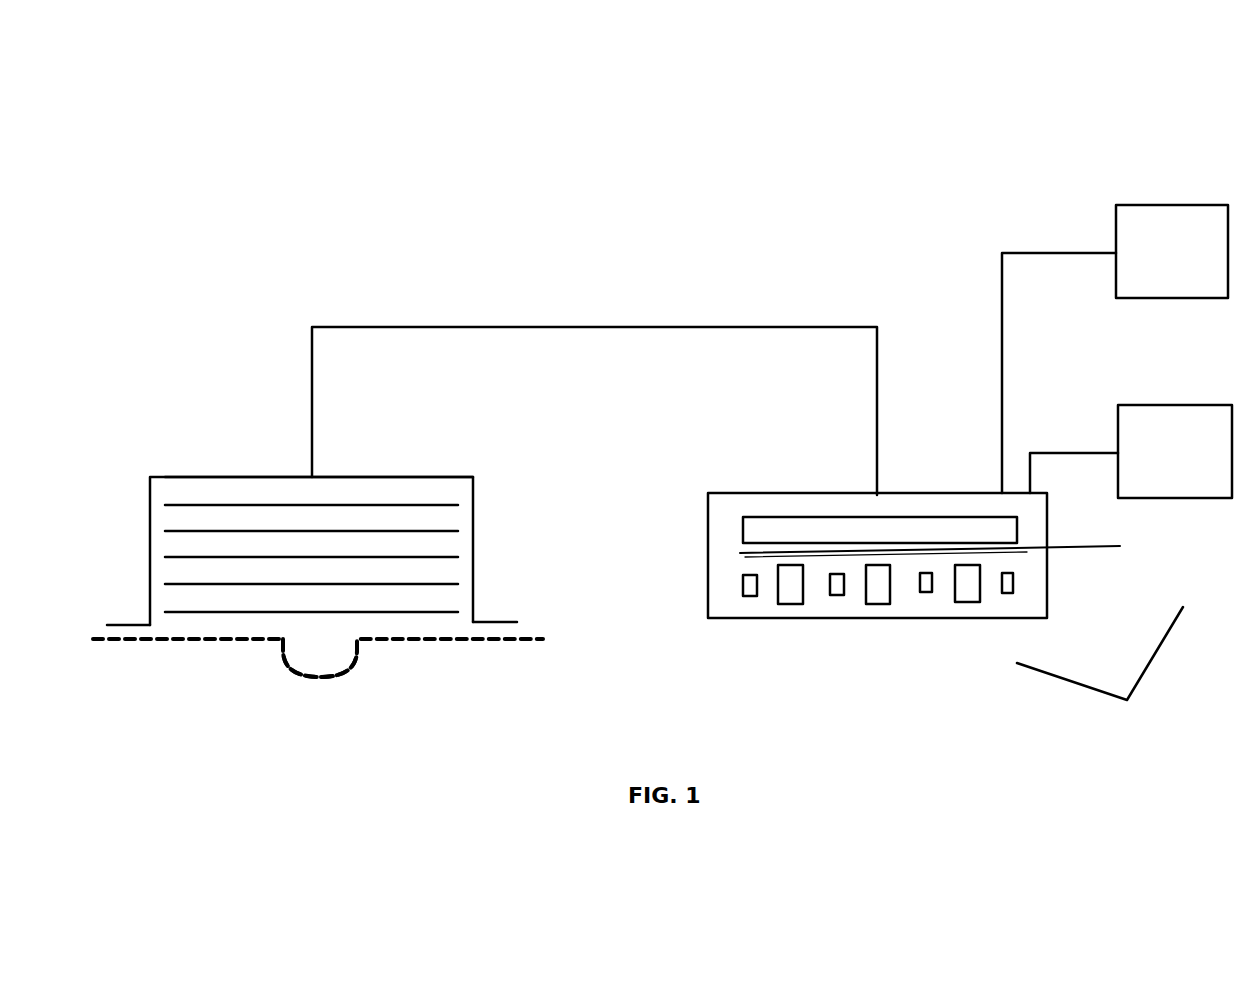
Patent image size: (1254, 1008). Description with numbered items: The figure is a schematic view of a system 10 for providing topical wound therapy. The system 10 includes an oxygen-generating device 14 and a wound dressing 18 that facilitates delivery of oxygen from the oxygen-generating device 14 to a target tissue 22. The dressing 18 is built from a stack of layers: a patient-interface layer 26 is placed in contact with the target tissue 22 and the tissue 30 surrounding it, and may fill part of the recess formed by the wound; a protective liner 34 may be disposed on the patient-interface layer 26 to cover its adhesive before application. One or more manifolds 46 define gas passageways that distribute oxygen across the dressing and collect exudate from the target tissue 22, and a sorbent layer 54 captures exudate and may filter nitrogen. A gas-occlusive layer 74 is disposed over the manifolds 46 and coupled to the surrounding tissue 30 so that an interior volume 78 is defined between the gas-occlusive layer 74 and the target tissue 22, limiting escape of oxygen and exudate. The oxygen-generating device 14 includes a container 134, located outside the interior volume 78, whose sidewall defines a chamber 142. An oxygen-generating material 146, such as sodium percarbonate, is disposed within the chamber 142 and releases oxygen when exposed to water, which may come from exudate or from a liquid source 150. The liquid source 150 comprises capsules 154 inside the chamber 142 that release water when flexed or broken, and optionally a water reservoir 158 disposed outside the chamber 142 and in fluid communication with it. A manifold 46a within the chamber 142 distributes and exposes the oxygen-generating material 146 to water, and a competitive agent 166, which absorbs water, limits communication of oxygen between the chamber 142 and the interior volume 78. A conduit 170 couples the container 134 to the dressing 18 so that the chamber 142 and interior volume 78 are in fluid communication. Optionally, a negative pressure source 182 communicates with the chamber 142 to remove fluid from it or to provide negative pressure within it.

The system 10 is at (224, 161).
The oxygen-generating device 14 is at (714, 459).
The wound dressing 18 is at (175, 412).
The target tissue 22 is at (296, 695).
The patient-interface layer 26 is at (177, 585).
The tissue surrounding the target tissue 30 is at (200, 660).
The protective liner 34 is at (173, 613).
The manifold 46 is at (167, 505).
The manifold 46a is at (745, 553).
The sorbent layer 54 is at (447, 529).
The gas-occlusive layer 74 is at (440, 475).
The interior volume 78 is at (245, 484).
The container 134 is at (800, 492).
The chamber 142 is at (1038, 568).
The oxygen-generating material 146 is at (1020, 529).
The liquid source 150 is at (1100, 668).
The capsule 154 is at (968, 603).
The water reservoir 158 is at (1174, 500).
The competitive agent 166 is at (924, 596).
The conduit 170 is at (602, 326).
The negative pressure source 182 is at (1173, 204).